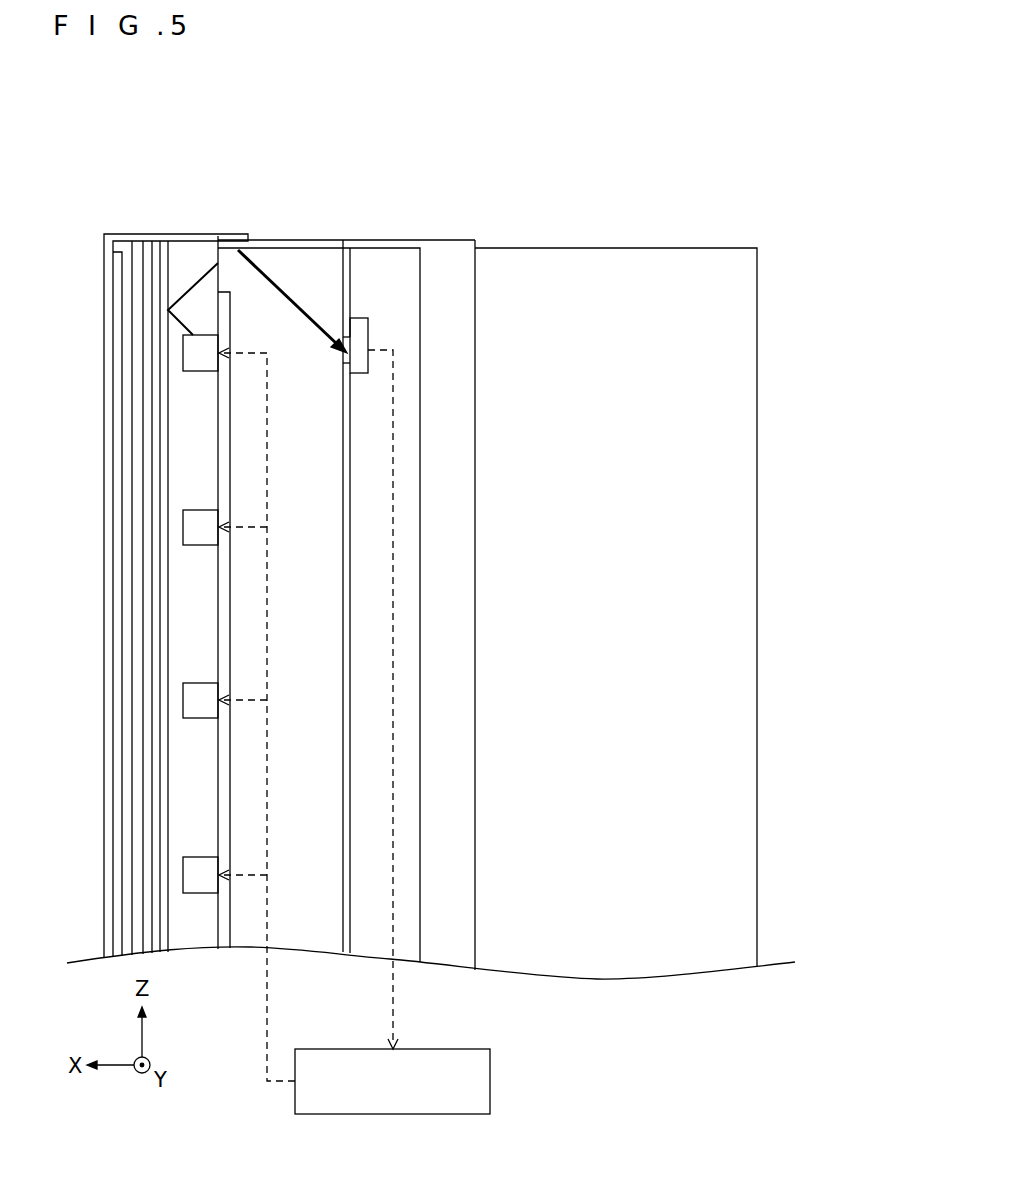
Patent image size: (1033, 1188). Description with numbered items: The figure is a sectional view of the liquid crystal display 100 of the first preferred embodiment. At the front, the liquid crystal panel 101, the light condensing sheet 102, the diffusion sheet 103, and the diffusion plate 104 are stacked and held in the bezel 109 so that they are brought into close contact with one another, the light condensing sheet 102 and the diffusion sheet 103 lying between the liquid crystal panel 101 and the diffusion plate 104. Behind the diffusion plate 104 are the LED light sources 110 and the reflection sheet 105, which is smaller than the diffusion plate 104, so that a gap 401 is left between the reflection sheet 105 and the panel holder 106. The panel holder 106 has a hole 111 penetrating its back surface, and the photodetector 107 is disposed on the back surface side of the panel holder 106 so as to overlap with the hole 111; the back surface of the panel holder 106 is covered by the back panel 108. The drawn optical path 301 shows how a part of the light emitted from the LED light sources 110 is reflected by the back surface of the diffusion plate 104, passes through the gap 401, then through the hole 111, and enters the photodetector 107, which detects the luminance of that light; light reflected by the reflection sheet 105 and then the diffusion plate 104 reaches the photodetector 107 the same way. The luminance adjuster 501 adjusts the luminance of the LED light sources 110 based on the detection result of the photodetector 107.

The liquid crystal display 100 is at (52, 141).
The liquid crystal panel 101 is at (127, 245).
The light condensing sheet 102 is at (138, 245).
The diffusion sheet 103 is at (148, 245).
The diffusion plate 104 is at (162, 245).
The reflection sheet 105 is at (218, 425).
The panel holder 106 is at (350, 282).
The photodetector 107 is at (360, 318).
The back panel 108 is at (462, 250).
The bezel 109 is at (195, 232).
The LED light sources 110 is at (192, 353).
The hole 111 is at (342, 355).
The optical path 301 is at (257, 267).
The gap 401 is at (213, 292).
The luminance adjuster 501 is at (490, 1081).